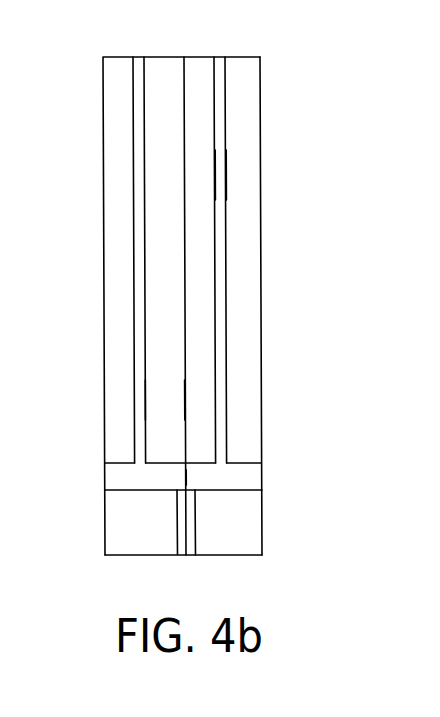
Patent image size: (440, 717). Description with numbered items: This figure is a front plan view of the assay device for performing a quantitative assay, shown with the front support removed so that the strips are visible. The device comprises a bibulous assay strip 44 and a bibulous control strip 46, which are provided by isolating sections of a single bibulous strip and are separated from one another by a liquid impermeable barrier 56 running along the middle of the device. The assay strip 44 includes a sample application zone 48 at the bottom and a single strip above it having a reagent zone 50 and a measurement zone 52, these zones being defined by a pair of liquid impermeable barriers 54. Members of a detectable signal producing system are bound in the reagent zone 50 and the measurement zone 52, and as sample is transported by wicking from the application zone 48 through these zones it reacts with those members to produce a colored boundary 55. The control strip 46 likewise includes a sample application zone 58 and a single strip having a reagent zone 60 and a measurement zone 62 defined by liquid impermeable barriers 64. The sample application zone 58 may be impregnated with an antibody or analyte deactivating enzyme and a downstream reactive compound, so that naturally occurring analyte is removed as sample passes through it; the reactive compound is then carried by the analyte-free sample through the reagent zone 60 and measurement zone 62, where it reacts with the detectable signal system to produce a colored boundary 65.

The bibulous assay strip 44 is at (225, 98).
The bibulous control strip 46 is at (133, 100).
The sample application zone 48 is at (258, 515).
The reagent zone 50 is at (253, 477).
The measurement zone 52 is at (220, 337).
The liquid impermeable barriers 54 is at (217, 75).
The colored boundary 55 is at (220, 162).
The liquid impermeable barrier 56 is at (183, 82).
The sample application zone 58 is at (123, 525).
The reagent zone 60 is at (117, 477).
The measurement zone 62 is at (141, 407).
The liquid impermeable barriers 64 is at (137, 306).
The colored boundary 65 is at (133, 212).